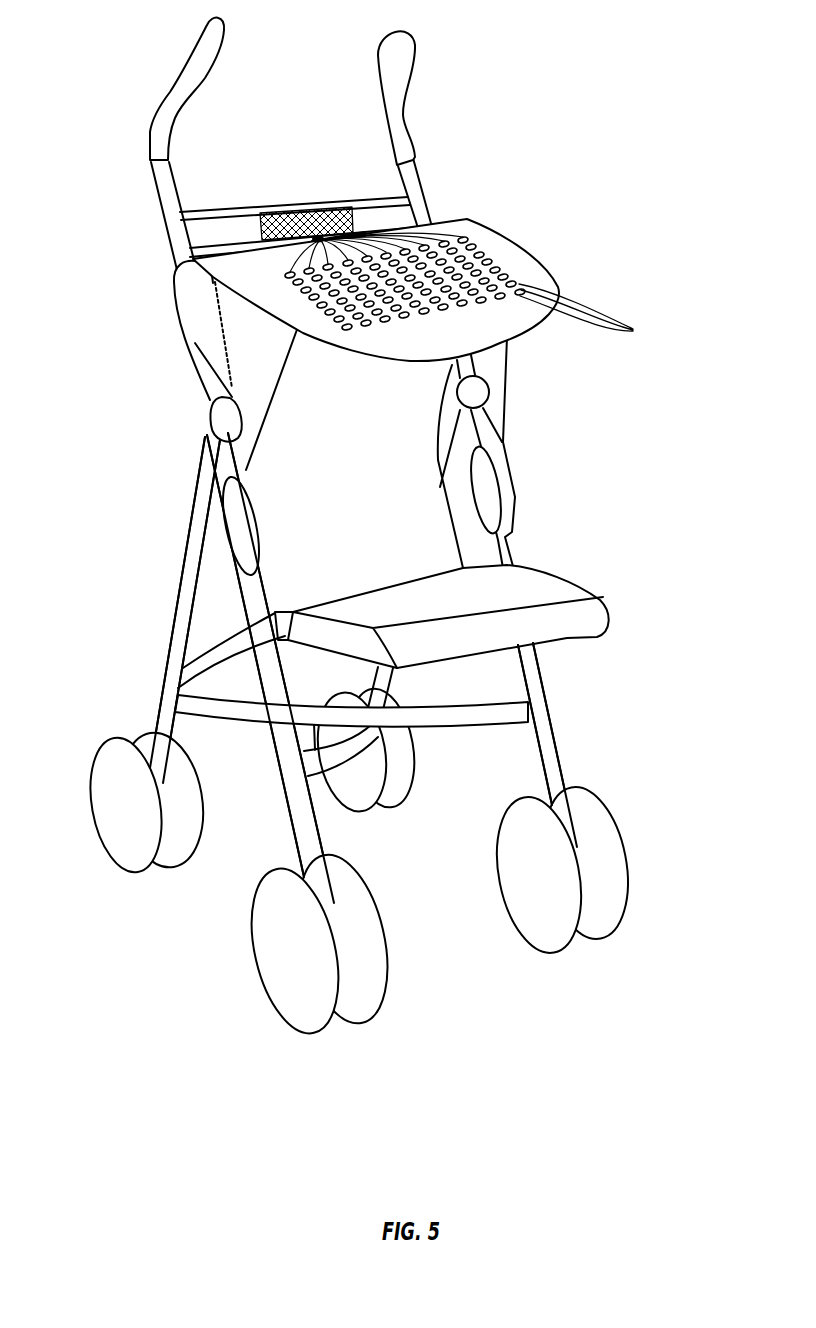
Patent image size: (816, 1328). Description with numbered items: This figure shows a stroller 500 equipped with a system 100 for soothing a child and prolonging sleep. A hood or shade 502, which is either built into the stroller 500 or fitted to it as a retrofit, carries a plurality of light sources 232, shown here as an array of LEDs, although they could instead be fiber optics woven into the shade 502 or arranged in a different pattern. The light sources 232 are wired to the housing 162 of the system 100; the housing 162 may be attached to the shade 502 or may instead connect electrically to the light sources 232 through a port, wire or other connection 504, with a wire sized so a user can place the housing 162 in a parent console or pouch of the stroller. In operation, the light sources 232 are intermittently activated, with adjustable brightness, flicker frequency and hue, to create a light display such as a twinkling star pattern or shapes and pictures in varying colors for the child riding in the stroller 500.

The system 100 is at (397, 239).
The housing 162 is at (342, 204).
The light sources 232 is at (596, 313).
The stroller 500 is at (112, 222).
The hood or shade 502 is at (543, 257).
The connection 504 is at (278, 265).